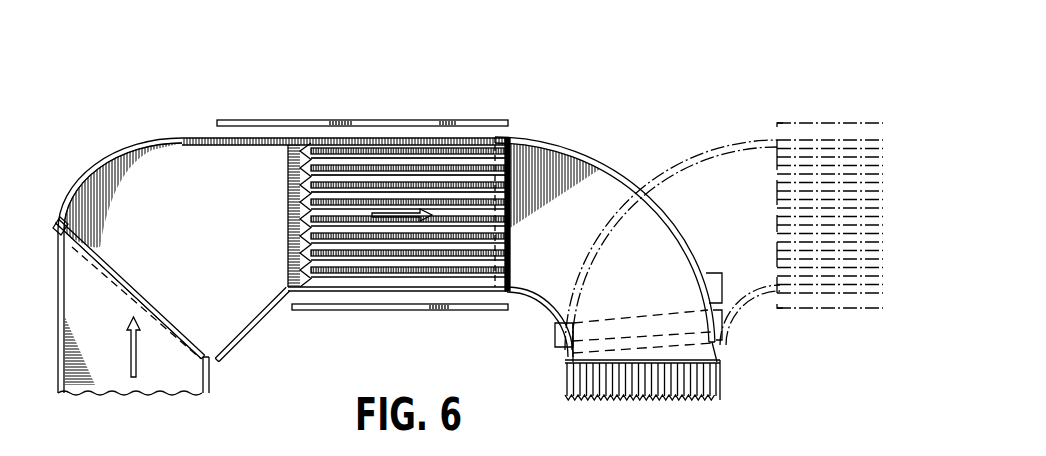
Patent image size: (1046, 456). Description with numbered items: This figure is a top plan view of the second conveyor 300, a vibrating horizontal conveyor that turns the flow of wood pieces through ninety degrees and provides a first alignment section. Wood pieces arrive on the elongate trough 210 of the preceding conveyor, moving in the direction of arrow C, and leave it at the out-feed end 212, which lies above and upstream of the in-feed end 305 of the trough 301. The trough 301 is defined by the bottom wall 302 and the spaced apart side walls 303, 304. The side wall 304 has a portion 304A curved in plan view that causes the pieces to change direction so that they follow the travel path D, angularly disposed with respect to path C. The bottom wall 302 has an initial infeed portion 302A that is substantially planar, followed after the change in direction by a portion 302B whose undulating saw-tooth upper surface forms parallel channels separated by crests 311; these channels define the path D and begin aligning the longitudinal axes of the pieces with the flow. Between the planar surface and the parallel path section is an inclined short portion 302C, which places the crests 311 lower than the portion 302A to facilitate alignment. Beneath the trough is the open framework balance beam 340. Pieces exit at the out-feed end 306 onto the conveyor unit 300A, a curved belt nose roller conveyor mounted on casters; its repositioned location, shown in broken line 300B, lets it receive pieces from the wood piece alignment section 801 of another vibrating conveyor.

The second conveyor 300 is at (680, 204).
The conveyor unit 300A is at (583, 187).
The broken line position of conveyor unit 300B is at (729, 146).
The trough 301 is at (243, 316).
The bottom wall 302 is at (260, 328).
The initial infeed portion 302A is at (245, 162).
The undulating portion 302B is at (445, 173).
The inclined short portion 302C is at (302, 187).
The side wall 303 is at (278, 304).
The side wall 304 is at (200, 137).
The curved portion of side wall 304A is at (147, 150).
The in-feed end 305 is at (138, 283).
The out-feed end 306 is at (510, 228).
The crest 311 is at (397, 235).
The balance beam 340 is at (375, 110).
The elongate trough 210 is at (100, 378).
The out-feed end 212 is at (192, 338).
The wood piece alignment section 801 is at (837, 310).
The direction of travel arrow C is at (128, 353).
The travel path D is at (393, 212).